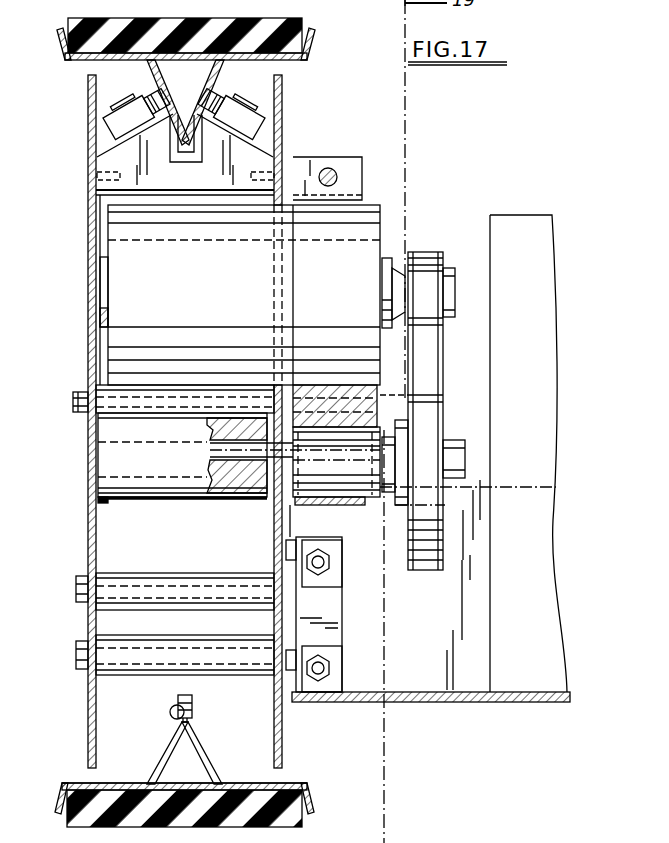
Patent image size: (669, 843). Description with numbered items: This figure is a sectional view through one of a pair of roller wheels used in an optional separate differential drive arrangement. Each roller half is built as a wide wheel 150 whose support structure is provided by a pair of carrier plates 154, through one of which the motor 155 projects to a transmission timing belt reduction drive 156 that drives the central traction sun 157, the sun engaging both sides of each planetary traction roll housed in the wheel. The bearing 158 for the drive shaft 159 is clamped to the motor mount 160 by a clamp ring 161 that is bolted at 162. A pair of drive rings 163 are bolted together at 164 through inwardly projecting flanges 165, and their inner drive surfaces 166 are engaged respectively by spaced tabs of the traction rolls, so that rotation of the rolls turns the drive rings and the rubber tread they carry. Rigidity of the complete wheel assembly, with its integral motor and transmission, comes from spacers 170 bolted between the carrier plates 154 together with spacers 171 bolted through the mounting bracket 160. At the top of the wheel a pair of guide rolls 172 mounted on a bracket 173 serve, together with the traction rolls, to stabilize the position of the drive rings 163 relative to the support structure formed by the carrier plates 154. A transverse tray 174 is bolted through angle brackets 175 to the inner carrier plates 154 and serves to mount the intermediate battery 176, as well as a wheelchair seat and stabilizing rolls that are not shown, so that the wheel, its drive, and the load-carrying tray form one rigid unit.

The wide wheel 150 is at (73, 298).
The carrier plates 154 is at (274, 540).
The motor 155 is at (236, 302).
The transmission timing belt reduction drive 156 is at (430, 252).
The central traction sun 157 is at (113, 503).
The bearing 158 is at (383, 450).
The drive shaft 159 is at (226, 456).
The motor mount 160 is at (325, 388).
The clamp ring 161 is at (351, 163).
The bolts 162 is at (327, 169).
The drive rings 163 is at (172, 756).
The bolts 164 is at (195, 716).
The inwardly projecting flanges 165 is at (178, 700).
The inner drive surfaces 166 is at (119, 783).
The spacers 170 is at (200, 605).
The spacers 171 is at (125, 407).
The guide rolls 172 is at (115, 124).
The bracket 173 is at (110, 166).
The transverse tray 174 is at (425, 703).
The angle brackets 175 is at (327, 690).
The intermediate battery 176 is at (528, 690).